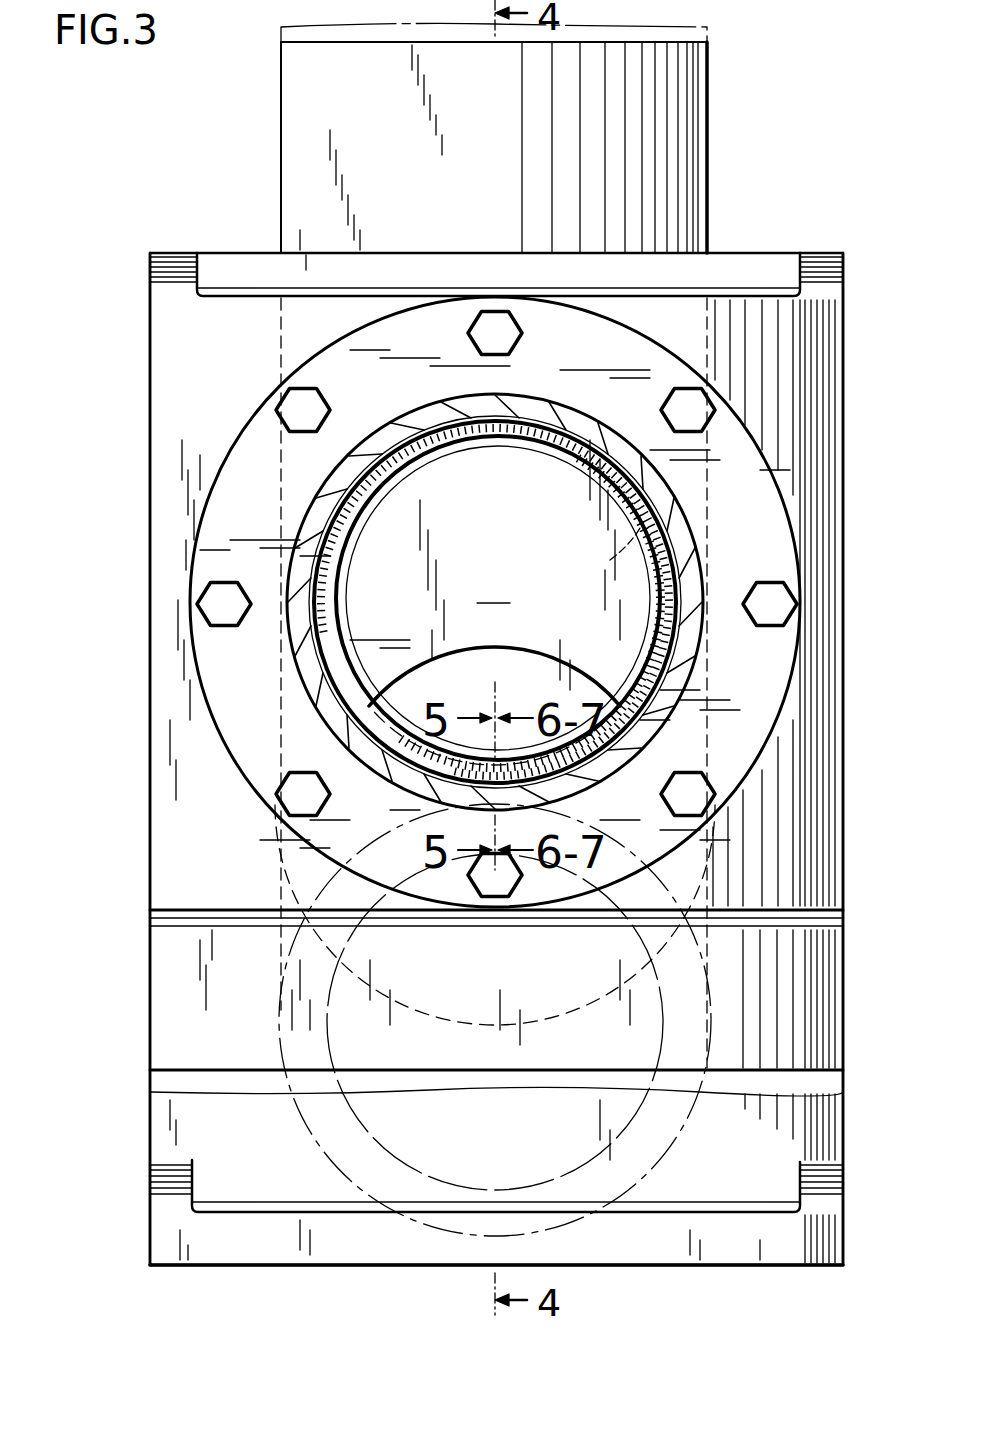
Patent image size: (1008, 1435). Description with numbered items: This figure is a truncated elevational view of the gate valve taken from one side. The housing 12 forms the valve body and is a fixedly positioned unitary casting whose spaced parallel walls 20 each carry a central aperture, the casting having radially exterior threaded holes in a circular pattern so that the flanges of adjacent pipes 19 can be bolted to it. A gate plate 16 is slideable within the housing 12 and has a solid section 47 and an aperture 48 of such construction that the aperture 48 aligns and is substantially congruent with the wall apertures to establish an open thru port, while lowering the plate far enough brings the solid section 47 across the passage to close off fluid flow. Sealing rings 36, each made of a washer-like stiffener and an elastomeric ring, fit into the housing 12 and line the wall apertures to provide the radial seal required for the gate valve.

The housing 12 is at (852, 522).
The gate plate 16 is at (232, 106).
The flanged pipes 19 is at (382, 428).
The walls 20 is at (160, 462).
The sealing rings 36 is at (355, 545).
The solid section 47 is at (281, 31).
The aperture 48 is at (640, 560).